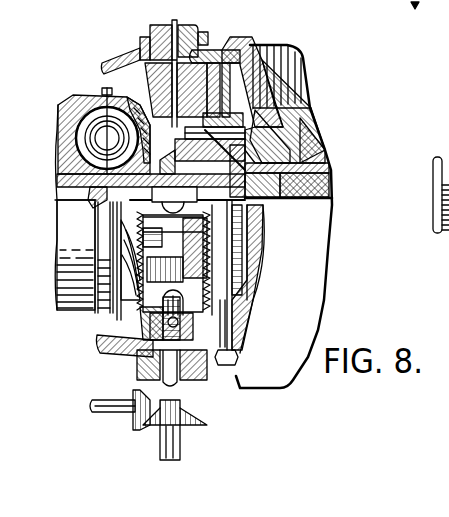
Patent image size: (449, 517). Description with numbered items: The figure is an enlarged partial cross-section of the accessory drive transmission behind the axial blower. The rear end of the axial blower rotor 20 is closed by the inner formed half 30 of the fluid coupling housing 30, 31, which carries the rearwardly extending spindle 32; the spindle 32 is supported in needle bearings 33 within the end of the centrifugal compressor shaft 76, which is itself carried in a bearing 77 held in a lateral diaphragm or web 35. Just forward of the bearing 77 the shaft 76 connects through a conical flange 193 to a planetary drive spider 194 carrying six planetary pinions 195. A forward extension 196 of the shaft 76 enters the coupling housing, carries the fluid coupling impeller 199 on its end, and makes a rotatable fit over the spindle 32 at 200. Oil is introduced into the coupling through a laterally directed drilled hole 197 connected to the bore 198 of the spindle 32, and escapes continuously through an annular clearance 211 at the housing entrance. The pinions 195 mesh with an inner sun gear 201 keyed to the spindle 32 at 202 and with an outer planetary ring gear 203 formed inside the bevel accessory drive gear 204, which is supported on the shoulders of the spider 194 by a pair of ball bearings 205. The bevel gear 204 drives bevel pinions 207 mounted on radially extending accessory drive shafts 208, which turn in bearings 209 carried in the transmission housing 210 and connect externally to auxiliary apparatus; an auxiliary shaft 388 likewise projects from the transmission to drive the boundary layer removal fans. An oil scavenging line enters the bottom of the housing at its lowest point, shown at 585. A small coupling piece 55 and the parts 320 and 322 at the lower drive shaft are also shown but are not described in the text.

The axial blower rotor 20 is at (76, 100).
The inner formed half of fluid coupling housing 30 is at (60, 145).
The fluid coupling housing half 31 is at (138, 108).
The rear axial blower spindle 32 is at (134, 206).
The needle bearings 33 is at (268, 198).
The lateral diaphragm or web 35 is at (312, 146).
The coupling 55 is at (433, 198).
The centrifugal compressor shaft 76 is at (329, 187).
The bearing 77 is at (329, 165).
The conical flange 193 is at (250, 180).
The planetary drive spider 194 is at (275, 127).
The planetary pinions 195 is at (258, 205).
The forward shaft extension 196 is at (190, 165).
The laterally directed drilled hole 197 is at (90, 192).
The bore of rear axial blower shaft 198 is at (140, 232).
The fluid coupling impeller 199 is at (107, 112).
The rotatable fit 200 is at (97, 200).
The inner sun gear 201 is at (151, 193).
The key 202 is at (268, 240).
The outer planetary ring gear 203 is at (302, 96).
The bevel accessory drive gear 204 is at (240, 47).
The ball bearings 205 is at (190, 130).
The bevel pinions 207 is at (147, 77).
The accessory drive shaft 208 is at (177, 29).
The bearings 209 is at (200, 50).
The transmission housing 210 is at (148, 40).
The annular clearance 211 is at (174, 152).
The shaft 320 is at (112, 414).
The bevel pinion 322 is at (136, 429).
The auxiliary shaft 388 is at (183, 406).
The oil scavenging line entry 585 is at (232, 365).